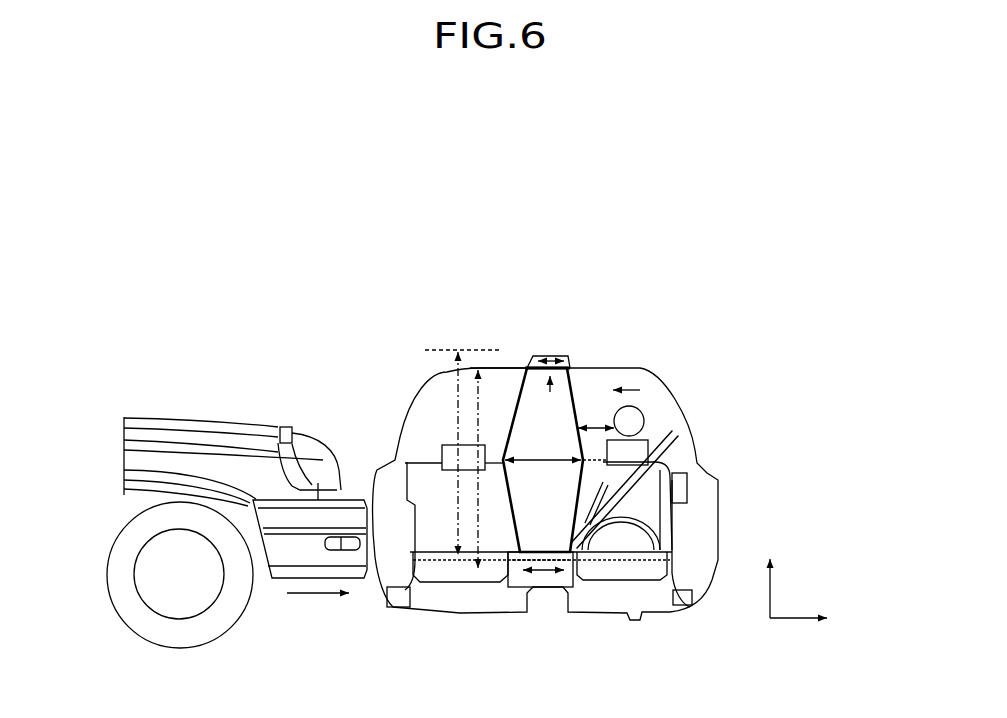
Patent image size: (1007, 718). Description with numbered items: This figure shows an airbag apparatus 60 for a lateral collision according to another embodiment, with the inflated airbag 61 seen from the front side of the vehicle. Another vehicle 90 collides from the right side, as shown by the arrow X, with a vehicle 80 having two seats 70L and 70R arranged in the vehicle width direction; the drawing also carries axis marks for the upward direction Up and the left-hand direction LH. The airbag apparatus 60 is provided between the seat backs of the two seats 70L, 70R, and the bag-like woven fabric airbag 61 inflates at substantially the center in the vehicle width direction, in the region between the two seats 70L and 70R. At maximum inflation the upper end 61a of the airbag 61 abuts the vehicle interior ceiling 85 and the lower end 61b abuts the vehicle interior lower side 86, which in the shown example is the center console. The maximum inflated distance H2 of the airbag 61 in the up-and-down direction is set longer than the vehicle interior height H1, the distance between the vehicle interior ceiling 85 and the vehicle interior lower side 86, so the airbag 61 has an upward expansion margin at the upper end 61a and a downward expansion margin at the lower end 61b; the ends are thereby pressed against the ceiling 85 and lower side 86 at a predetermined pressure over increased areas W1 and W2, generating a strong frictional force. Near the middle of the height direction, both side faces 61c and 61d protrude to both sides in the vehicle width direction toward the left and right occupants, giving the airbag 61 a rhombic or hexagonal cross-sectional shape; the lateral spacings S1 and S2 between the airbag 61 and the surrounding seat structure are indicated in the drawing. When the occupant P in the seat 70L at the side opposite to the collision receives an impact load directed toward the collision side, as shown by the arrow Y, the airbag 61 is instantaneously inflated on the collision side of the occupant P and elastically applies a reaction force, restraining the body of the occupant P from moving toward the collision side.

The another vehicle 90 is at (200, 420).
The vehicle 80 is at (410, 407).
The vehicle interior ceiling 85 is at (507, 367).
The airbag apparatus 60 is at (550, 431).
The airbag 61 is at (550, 431).
The upper end of the airbag 61a is at (542, 355).
The lower end of the airbag 61b is at (566, 547).
The side face of the airbag 61c is at (567, 392).
The side face of the airbag 61d is at (520, 392).
The vehicle interior lower side 86 is at (552, 588).
The seat 70R is at (445, 539).
The seat 70L is at (640, 487).
The occupant P is at (645, 420).
The increased area W1 is at (568, 358).
The increased area W2 is at (542, 577).
The vehicle interior height H1 is at (472, 430).
The maximum inflated distance H2 is at (442, 453).
The distance S1 is at (556, 448).
The distance S2 is at (577, 424).
The arrow X is at (318, 606).
The arrow Y is at (626, 401).
The upward direction Up is at (773, 574).
The left-hand direction LH is at (814, 622).